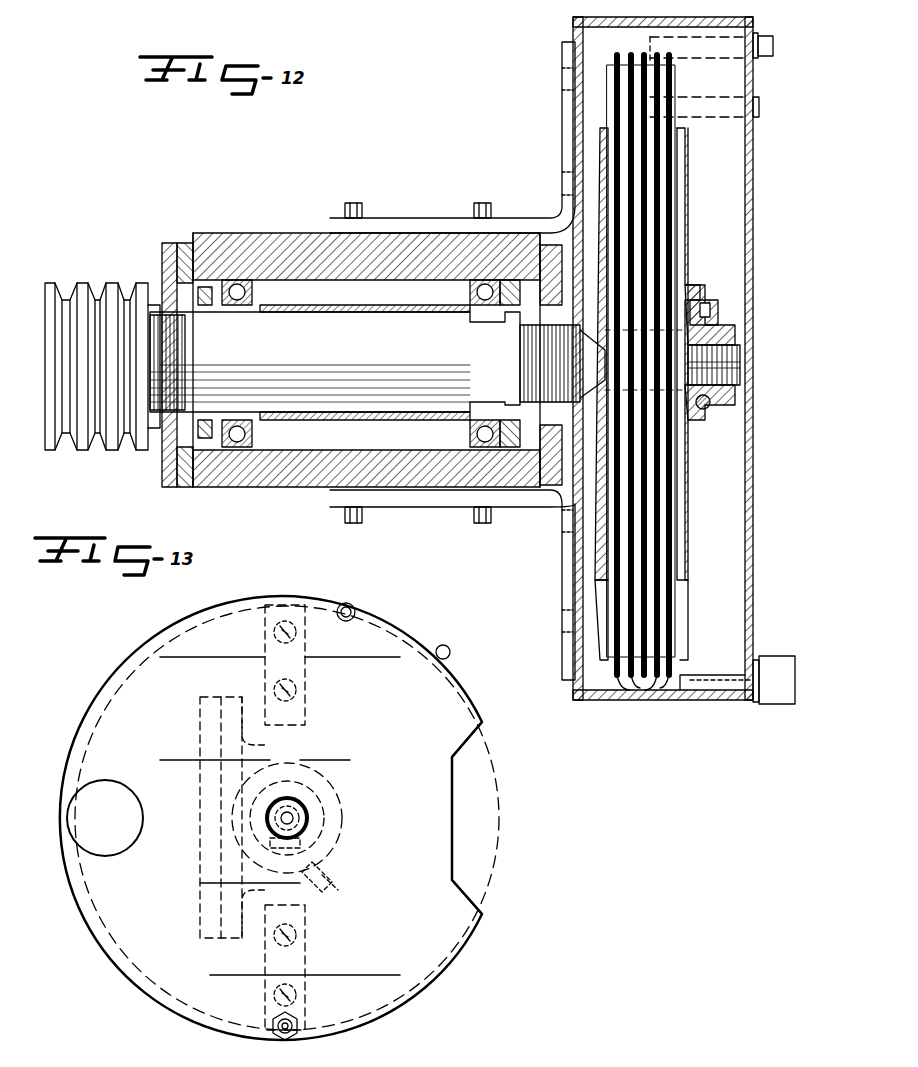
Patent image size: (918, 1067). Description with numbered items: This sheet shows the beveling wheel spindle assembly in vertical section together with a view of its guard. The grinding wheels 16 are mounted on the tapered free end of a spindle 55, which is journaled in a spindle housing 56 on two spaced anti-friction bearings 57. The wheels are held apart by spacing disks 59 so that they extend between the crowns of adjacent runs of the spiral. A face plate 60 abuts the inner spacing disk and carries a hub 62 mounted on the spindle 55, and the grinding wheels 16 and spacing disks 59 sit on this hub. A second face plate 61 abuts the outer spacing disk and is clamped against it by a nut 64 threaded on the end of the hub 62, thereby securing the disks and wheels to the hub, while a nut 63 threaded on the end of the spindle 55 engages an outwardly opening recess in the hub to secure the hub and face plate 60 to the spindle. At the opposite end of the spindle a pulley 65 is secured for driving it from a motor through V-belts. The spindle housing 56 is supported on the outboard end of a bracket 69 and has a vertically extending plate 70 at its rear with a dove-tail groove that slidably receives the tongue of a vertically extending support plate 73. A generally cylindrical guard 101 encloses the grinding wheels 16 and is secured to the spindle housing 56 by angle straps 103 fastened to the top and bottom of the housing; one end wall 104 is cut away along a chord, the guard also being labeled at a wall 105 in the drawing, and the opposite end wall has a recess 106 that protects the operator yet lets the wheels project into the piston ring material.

In FIG. 12, the grinding wheels 16 is at (643, 684).
In FIG. 12, the spindle 55 is at (395, 332).
In FIG. 13, the spindle 55 is at (307, 810).
In FIG. 12, the spindle housing 56 is at (312, 480).
In FIG. 13, the spindle housing 56 is at (356, 778).
In FIG. 12, the anti-friction bearings 57 is at (240, 445).
In FIG. 12, the spacing disks 59 is at (622, 68).
In FIG. 12, the face plate 60 is at (600, 578).
In FIG. 12, the face plate 61 is at (682, 590).
In FIG. 12, the hub 62 is at (662, 298).
In FIG. 12, the nut 63 is at (712, 408).
In FIG. 12, the nut 64 is at (720, 318).
In FIG. 12, the pulley 65 is at (112, 455).
In FIG. 13, the bracket 69 is at (118, 735).
In FIG. 13, the vertically extending plate 70 is at (232, 697).
In FIG. 13, the support plate 73 is at (212, 697).
In FIG. 12, the guard 101 is at (585, 21).
In FIG. 13, the guard 101 is at (152, 1015).
In FIG. 12, the angle straps 103 is at (560, 150).
In FIG. 13, the angle straps 103 is at (305, 686).
In FIG. 12, the end wall 104 is at (575, 695).
In FIG. 12, the housing side wall 105 is at (750, 520).
In FIG. 13, the housing side wall 105 is at (395, 642).
In FIG. 13, the recess 106 is at (452, 812).